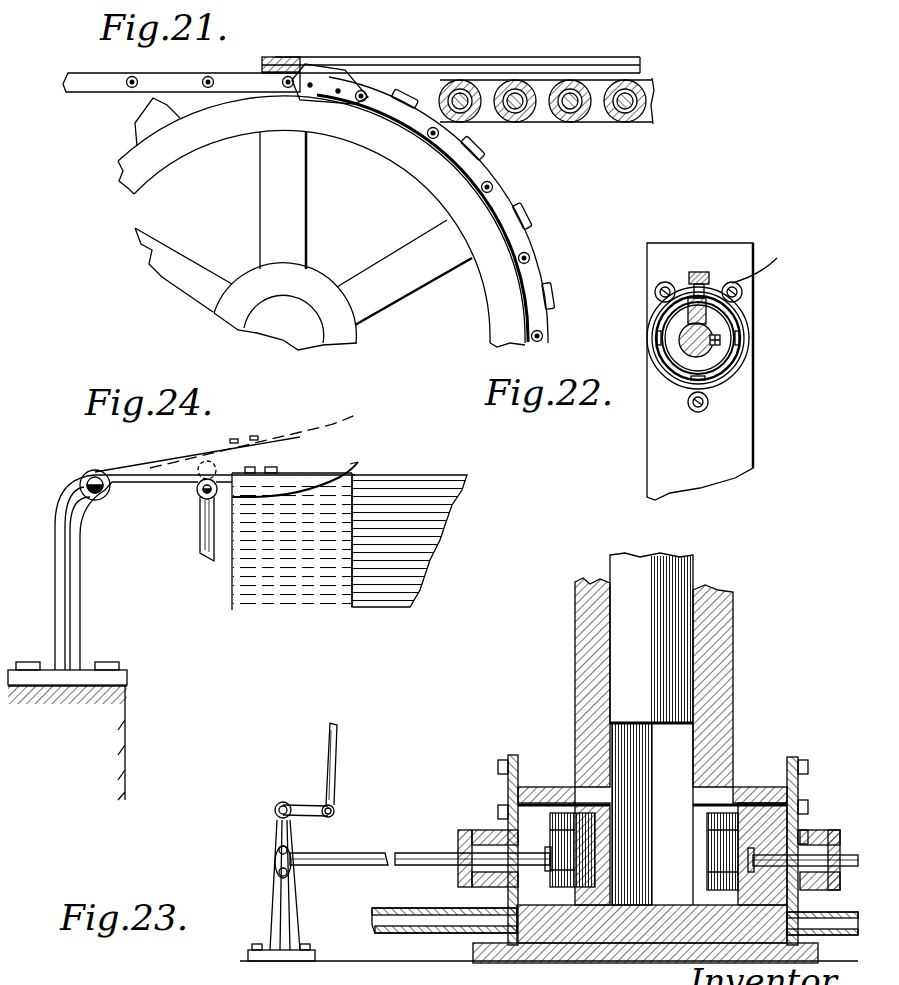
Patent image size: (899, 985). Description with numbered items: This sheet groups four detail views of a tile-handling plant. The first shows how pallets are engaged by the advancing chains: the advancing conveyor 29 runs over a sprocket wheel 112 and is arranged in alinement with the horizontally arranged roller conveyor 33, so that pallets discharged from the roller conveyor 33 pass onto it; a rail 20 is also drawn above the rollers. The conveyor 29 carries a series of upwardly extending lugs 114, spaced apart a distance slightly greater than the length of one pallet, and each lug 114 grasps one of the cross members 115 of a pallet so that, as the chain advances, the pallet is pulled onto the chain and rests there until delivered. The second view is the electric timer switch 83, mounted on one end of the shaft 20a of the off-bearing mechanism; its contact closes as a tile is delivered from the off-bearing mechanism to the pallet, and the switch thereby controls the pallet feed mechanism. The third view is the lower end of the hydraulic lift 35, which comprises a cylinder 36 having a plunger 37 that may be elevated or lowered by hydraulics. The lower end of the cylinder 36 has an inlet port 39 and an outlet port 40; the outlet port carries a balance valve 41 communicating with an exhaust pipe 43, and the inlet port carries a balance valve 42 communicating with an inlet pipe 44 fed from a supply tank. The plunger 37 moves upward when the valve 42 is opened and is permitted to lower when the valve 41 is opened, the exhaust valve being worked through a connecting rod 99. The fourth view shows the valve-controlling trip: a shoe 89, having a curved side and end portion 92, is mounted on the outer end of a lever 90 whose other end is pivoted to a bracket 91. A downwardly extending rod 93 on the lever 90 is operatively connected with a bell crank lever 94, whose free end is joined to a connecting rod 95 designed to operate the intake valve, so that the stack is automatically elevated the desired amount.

In FIG. 21, the advancing conveyor 29 is at (181, 83).
In FIG. 21, the cross member 115 is at (312, 78).
In FIG. 21, the lugs 114 is at (333, 77).
In FIG. 21, the track rail 20 is at (470, 73).
In FIG. 24, the track rail 20 is at (428, 486).
In FIG. 21, the roller conveyor 33 is at (549, 112).
In FIG. 21, the sprocket wheel 112 is at (442, 191).
In FIG. 22, the timer switch 83 is at (728, 313).
In FIG. 22, the shaft 20a is at (716, 340).
In FIG. 24, the shoe 89 is at (291, 471).
In FIG. 24, the lever 90 is at (160, 480).
In FIG. 24, the bracket 91 is at (66, 576).
In FIG. 24, the curved side and end portion 92 is at (359, 466).
In FIG. 24, the rod 93 is at (200, 536).
In FIG. 23, the rod 93 is at (336, 767).
In FIG. 23, the bell crank lever 94 is at (310, 821).
In FIG. 23, the connecting rod 95 is at (378, 854).
In FIG. 23, the plunger 37 is at (694, 567).
In FIG. 23, the hydraulic lift 35 is at (578, 633).
In FIG. 23, the cylinder 36 is at (726, 633).
In FIG. 23, the outlet port 40 is at (738, 794).
In FIG. 23, the inlet port 39 is at (649, 859).
In FIG. 23, the balance valve 42 is at (566, 878).
In FIG. 23, the balance valve 41 is at (745, 878).
In FIG. 23, the connecting rod 99 is at (845, 857).
In FIG. 23, the exhaust pipe 43 is at (838, 928).
In FIG. 23, the inlet pipe 44 is at (418, 935).